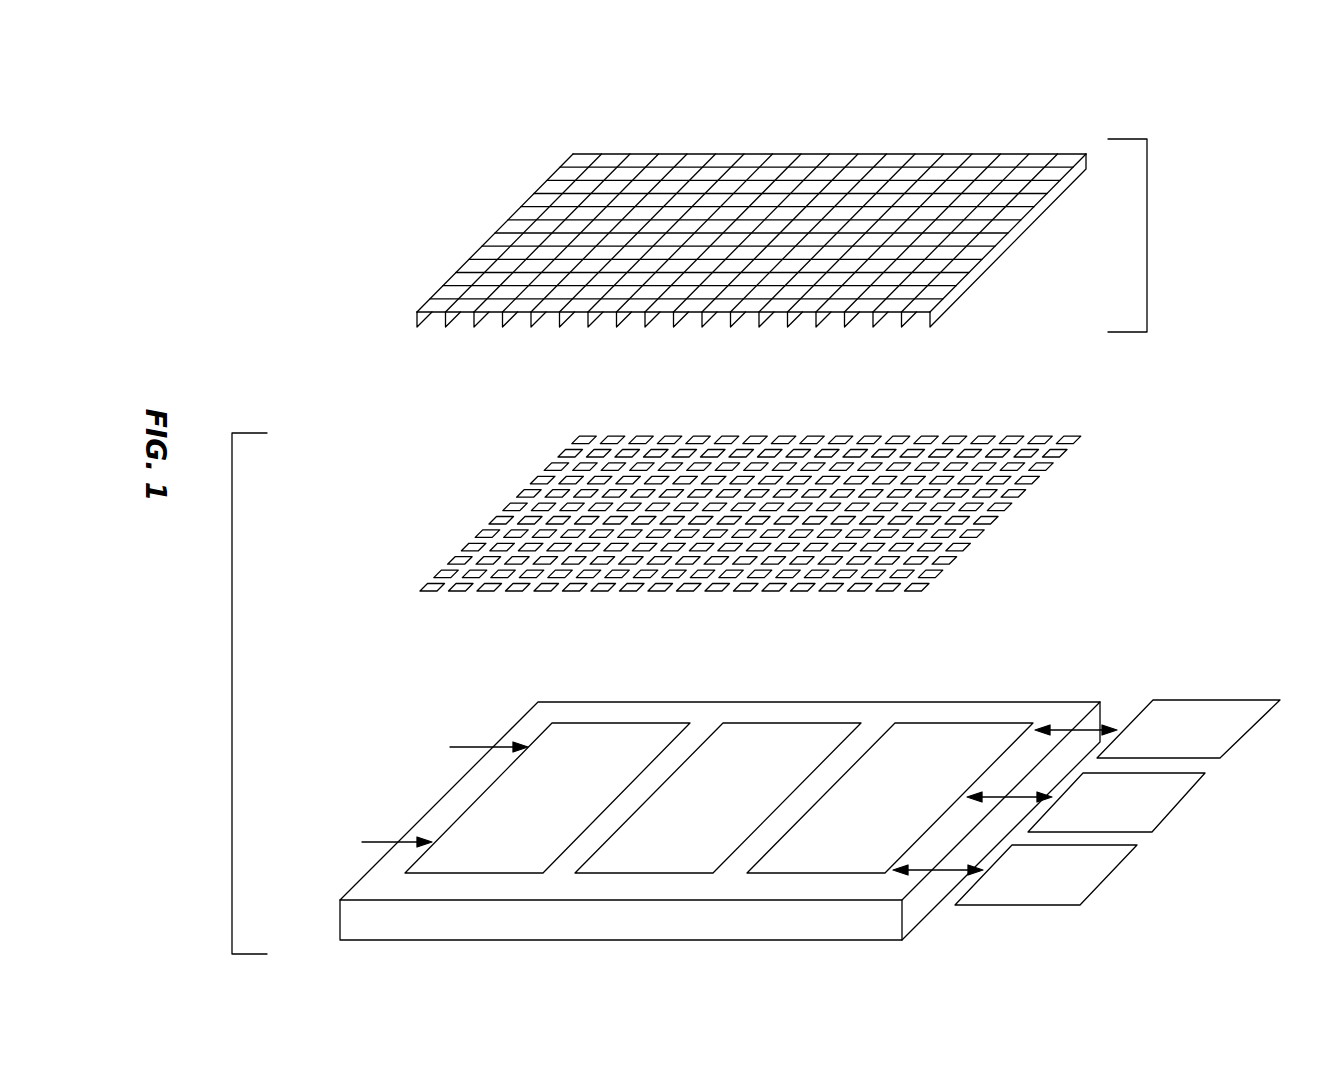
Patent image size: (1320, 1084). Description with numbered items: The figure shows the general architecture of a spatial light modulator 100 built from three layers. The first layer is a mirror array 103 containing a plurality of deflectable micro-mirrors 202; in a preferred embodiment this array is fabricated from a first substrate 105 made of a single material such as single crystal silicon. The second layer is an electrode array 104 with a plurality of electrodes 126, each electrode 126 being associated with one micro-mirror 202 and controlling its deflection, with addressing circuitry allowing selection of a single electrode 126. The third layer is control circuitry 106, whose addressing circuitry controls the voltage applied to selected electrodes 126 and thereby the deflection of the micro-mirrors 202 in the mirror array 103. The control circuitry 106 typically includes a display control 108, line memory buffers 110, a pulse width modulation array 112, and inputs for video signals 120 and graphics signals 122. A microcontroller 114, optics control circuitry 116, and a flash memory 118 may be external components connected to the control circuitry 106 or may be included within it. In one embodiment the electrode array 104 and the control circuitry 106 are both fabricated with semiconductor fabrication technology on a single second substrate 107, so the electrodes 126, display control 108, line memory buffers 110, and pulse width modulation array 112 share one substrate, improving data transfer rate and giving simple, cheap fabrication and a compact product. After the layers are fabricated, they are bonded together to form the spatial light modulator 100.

The spatial light modulator 100 is at (950, 80).
The mirror array 103 is at (523, 181).
The electrode array 104 is at (486, 502).
The first substrate 105 is at (1147, 256).
The control circuitry 106 is at (467, 691).
The second substrate 107 is at (232, 641).
The display control 108 is at (490, 852).
The line memory buffers 110 is at (665, 852).
The pulse width modulation array 112 is at (832, 854).
The microcontroller 114 is at (1207, 700).
The optics control circuitry 116 is at (1175, 812).
The flash memory 118 is at (1105, 875).
The video signals 120 is at (316, 756).
The graphics signals 122 is at (264, 916).
The electrodes 126 is at (665, 435).
The micro-mirrors 202 is at (642, 153).